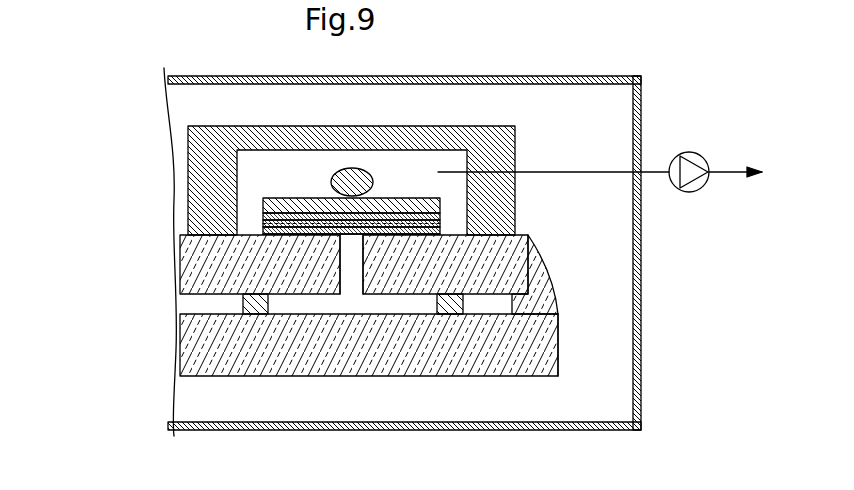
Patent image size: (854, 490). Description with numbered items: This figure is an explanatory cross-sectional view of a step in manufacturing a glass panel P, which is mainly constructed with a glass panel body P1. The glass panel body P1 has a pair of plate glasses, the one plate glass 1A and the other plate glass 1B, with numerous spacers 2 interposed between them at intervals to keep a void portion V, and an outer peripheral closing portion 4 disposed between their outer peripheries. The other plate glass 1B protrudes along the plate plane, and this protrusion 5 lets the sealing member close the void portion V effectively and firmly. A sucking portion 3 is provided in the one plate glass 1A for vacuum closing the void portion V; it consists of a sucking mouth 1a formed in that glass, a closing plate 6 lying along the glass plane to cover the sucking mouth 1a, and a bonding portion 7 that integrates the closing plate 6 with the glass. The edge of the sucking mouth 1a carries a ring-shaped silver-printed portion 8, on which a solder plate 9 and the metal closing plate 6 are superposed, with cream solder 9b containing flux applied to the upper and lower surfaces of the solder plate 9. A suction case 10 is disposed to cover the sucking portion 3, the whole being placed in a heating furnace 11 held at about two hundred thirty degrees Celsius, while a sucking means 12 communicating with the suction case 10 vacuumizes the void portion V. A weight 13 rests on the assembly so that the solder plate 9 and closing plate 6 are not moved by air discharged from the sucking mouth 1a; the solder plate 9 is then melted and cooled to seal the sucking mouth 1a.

The one plate glass 1A is at (200, 255).
The other plate glass 1B is at (195, 341).
The sucking mouth 1a is at (360, 288).
The spacers 2 is at (243, 302).
The sucking portion 3 is at (313, 197).
The outer peripheral closing portion 4 is at (549, 292).
The protrusion 5 is at (558, 333).
The closing plate 6 is at (440, 207).
The bonding portion 7 is at (255, 186).
The silver-printed portion 8 is at (440, 226).
The solder plate 9 is at (263, 224).
The cream solder 9b is at (263, 216).
The suction case 10 is at (203, 127).
The heating furnace 11 is at (642, 345).
The sucking means 12 is at (690, 152).
The weight 13 is at (363, 173).
The void portion V is at (318, 303).
The glass panel P is at (591, 377).
The glass panel body P1 is at (516, 378).